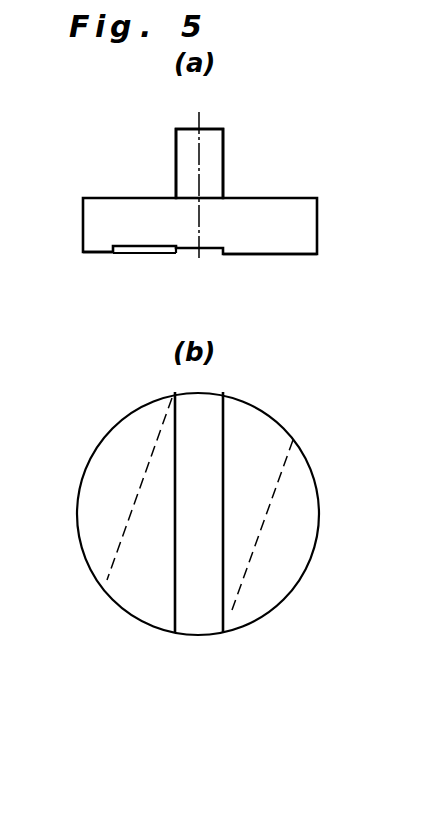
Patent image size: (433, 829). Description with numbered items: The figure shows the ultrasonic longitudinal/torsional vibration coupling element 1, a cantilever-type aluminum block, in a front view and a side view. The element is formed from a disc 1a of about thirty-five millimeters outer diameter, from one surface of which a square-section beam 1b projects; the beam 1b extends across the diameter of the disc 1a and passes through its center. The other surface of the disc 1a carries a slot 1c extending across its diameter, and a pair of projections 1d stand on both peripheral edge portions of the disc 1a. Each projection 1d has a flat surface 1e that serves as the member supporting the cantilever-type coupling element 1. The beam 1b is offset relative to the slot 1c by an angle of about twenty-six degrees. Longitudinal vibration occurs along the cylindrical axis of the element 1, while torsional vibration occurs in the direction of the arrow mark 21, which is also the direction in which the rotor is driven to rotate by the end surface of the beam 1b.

The longitudinal/torsional vibration coupling element 1 is at (72, 137).
The disc 1a is at (308, 233).
The beam 1b is at (212, 163).
The slot 1c is at (222, 255).
The projections 1d is at (98, 255).
The flat surface 1e is at (176, 173).
The arrow mark 21 is at (236, 101).